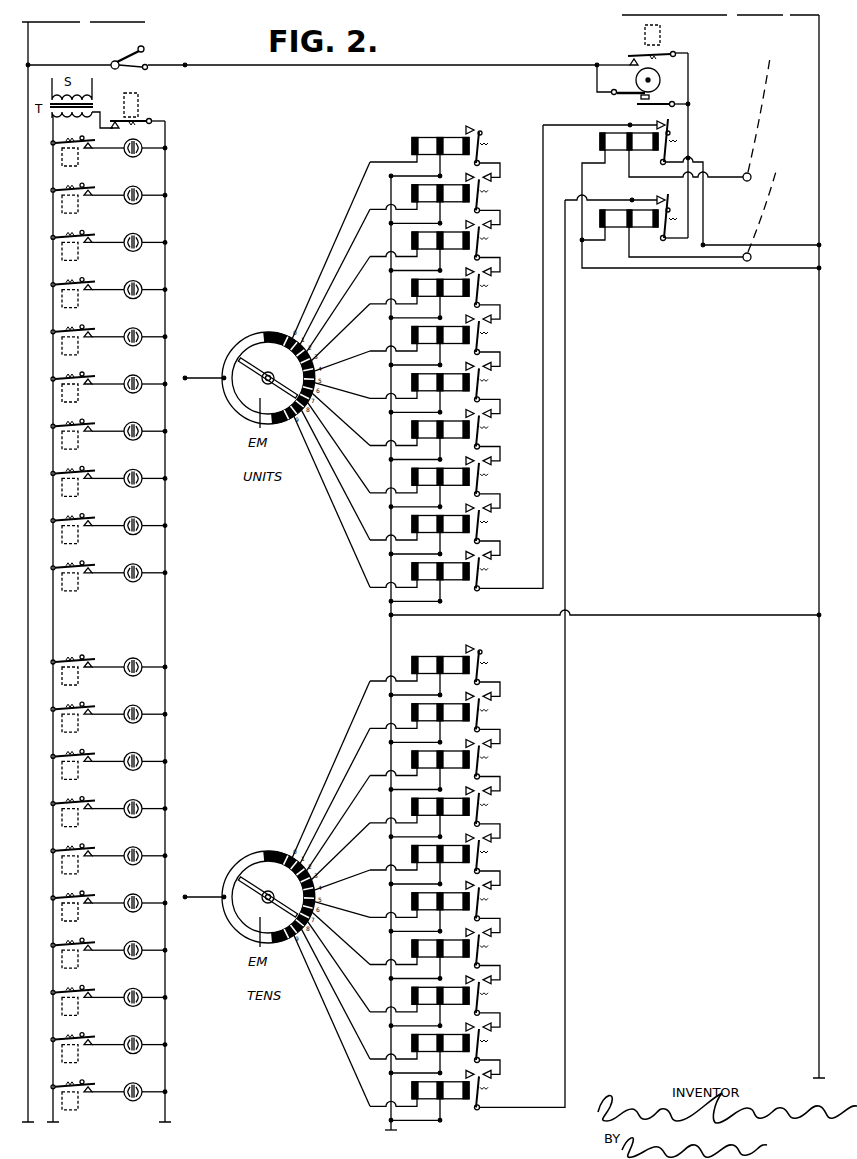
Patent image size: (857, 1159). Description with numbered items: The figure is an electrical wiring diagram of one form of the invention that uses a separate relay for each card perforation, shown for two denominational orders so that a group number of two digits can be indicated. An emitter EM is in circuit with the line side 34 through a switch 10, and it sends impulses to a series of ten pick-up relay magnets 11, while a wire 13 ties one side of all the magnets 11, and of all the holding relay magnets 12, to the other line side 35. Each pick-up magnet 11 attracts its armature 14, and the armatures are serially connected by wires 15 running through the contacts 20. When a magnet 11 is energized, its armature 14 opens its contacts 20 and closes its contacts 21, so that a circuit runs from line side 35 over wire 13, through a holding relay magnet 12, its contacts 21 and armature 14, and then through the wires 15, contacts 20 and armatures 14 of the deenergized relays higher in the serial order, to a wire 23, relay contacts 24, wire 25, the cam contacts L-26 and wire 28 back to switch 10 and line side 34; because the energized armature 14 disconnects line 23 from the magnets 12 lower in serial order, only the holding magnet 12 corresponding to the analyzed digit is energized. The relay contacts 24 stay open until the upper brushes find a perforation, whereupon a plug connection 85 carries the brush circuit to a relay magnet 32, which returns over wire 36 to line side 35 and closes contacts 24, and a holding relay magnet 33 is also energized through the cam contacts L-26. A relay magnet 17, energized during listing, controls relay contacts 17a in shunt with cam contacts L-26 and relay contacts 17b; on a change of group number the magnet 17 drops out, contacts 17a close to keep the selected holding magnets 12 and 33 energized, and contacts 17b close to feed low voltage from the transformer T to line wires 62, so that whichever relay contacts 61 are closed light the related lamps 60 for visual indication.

The switch 10 is at (130, 56).
The pick-up relay magnet 11 is at (414, 236).
The holding relay magnet 12 is at (62, 157).
The wire 13 is at (391, 423).
The armature 14 is at (480, 200).
The wire 15 is at (501, 224).
The relay magnet 17 is at (139, 105).
The relay contact 17a is at (630, 58).
The relay contact 17b is at (117, 118).
The cam contact L-26 is at (655, 98).
The contact 20 is at (480, 257).
The contact 21 is at (476, 128).
The wire 23 is at (546, 358).
The relay contact 24 is at (670, 130).
The wire 25 is at (690, 130).
The wire 28 is at (540, 64).
The relay magnet 32 is at (617, 150).
The holding relay magnet 33 is at (643, 150).
The line side 34 is at (30, 46).
The line side 35 is at (818, 90).
The wire 36 is at (612, 268).
The lamp 60 is at (142, 192).
The relay contact 61 is at (97, 238).
The line wire 62 is at (165, 264).
The plug connection 85 is at (765, 108).